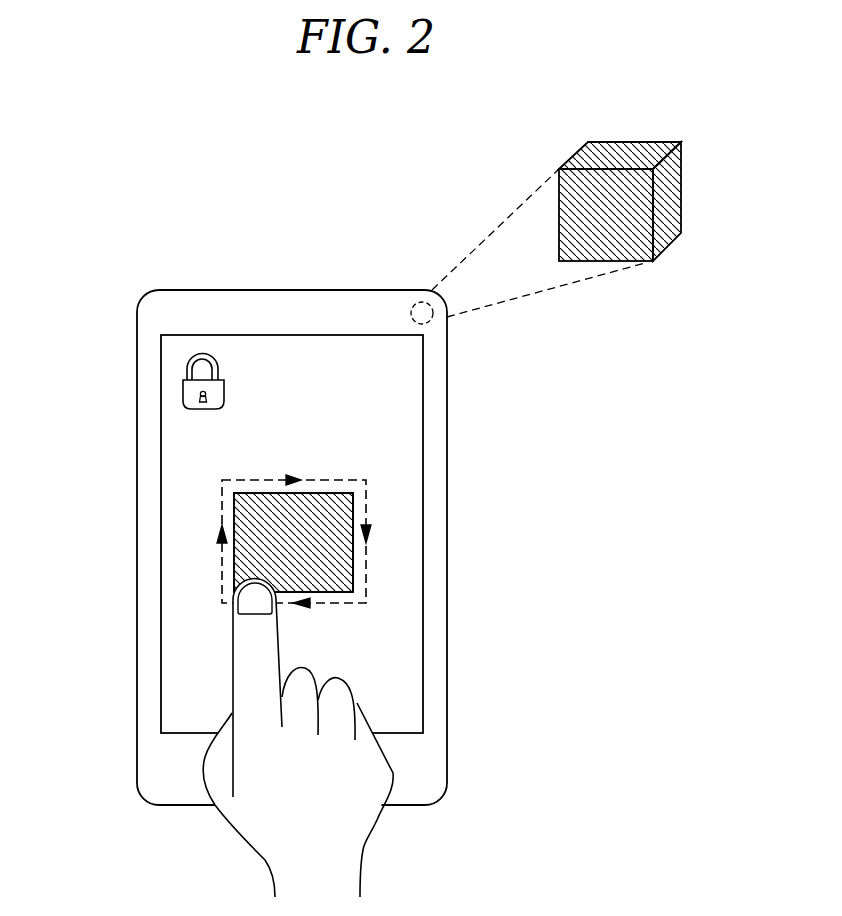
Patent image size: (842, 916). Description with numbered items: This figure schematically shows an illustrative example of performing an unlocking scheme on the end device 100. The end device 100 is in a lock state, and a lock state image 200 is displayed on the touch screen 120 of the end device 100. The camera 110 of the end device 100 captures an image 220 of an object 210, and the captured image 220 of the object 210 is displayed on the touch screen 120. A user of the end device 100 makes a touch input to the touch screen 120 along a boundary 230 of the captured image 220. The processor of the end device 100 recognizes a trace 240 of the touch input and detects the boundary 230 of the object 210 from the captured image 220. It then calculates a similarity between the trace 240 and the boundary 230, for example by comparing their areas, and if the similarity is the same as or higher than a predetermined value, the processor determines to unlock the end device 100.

The end device 100 is at (220, 290).
The camera 110 is at (433, 323).
The touch screen 120 is at (418, 457).
The lock state image 200 is at (195, 383).
The object 210 is at (592, 152).
The captured image 220 is at (308, 562).
The boundary 230 is at (353, 507).
The trace 240 is at (222, 518).